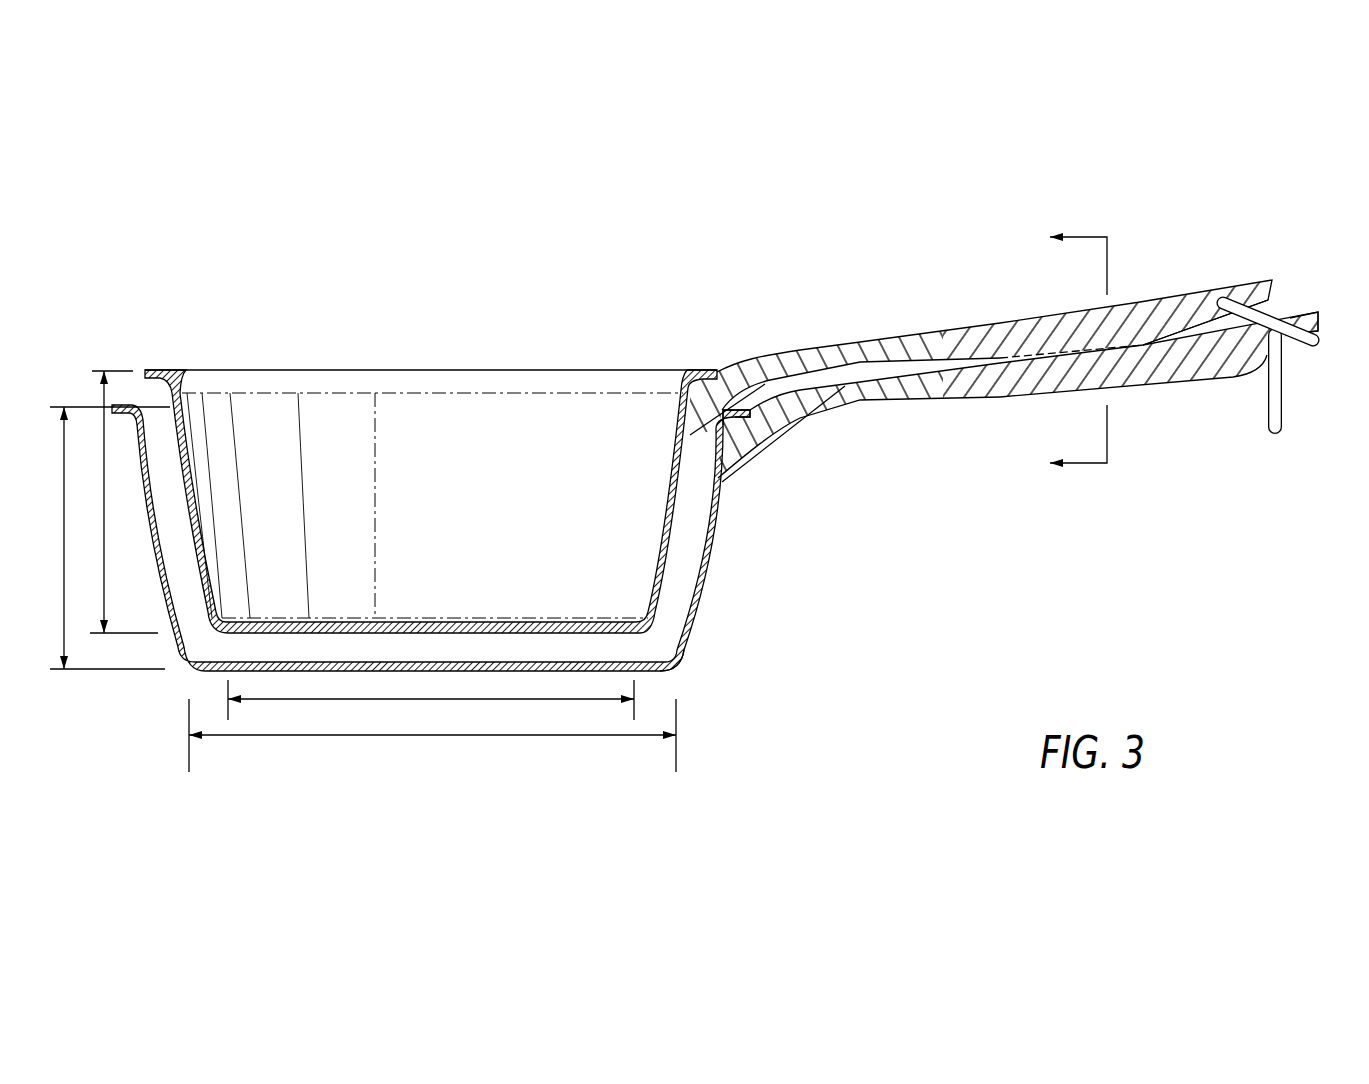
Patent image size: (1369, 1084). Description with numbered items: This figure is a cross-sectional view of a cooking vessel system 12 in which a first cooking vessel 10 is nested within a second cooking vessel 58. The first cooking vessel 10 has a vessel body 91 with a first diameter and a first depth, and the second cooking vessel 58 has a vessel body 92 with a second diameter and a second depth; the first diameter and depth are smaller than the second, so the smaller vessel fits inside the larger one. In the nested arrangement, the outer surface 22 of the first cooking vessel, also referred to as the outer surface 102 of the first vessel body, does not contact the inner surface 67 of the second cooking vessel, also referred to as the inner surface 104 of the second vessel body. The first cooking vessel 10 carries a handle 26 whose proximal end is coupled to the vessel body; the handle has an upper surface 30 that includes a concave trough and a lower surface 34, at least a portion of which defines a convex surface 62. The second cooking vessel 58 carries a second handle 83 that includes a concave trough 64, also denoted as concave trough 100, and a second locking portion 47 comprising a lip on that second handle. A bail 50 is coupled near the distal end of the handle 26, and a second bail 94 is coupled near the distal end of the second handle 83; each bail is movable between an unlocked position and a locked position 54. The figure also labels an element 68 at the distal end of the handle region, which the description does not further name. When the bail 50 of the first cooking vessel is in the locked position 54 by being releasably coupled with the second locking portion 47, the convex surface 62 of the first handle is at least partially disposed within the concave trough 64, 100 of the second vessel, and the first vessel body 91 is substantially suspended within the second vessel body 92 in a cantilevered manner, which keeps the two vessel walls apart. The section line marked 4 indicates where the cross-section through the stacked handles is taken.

The cooking vessel system 12 is at (763, 247).
The first cooking vessel 10 is at (147, 370).
The vessel body of the first cooking vessel 91 is at (702, 371).
The second cooking vessel 58 is at (127, 405).
The outer surface 22 is at (458, 538).
The outer surface of the first vessel body 102 is at (670, 552).
The vessel body of the second cooking vessel 92 is at (723, 487).
The inner surface of the second cooking vessel 67 is at (730, 642).
The inner surface of the second vessel body 104 is at (688, 620).
The handle 26 is at (985, 325).
The upper surface 30 is at (838, 345).
The lower surface 34 is at (806, 358).
The second handle 83 is at (943, 390).
The concave trough of the second cooking vessel 64 is at (1092, 396).
The concave trough of the second cooking vessel 100 is at (1152, 352).
The convex surface 62 is at (1150, 347).
The fastener head 68 is at (1273, 300).
The bail 50 is at (1208, 300).
The locked position 54 is at (1322, 298).
The second locking portion 47 is at (1238, 395).
The second bail 94 is at (1277, 432).
The section line 4- 4 is at (1066, 354).